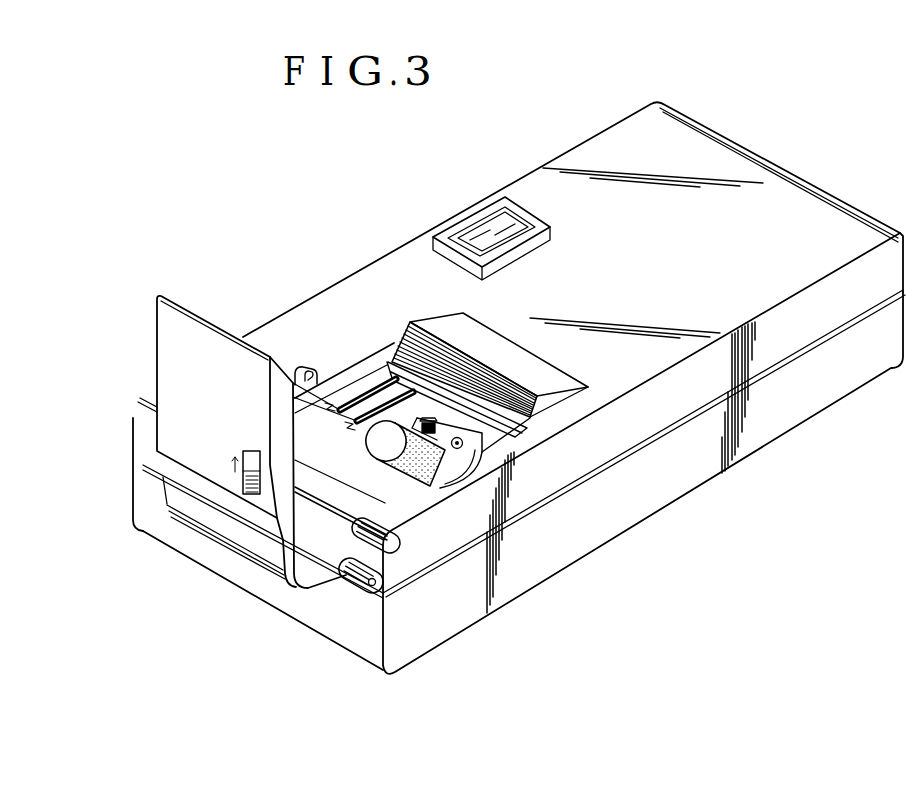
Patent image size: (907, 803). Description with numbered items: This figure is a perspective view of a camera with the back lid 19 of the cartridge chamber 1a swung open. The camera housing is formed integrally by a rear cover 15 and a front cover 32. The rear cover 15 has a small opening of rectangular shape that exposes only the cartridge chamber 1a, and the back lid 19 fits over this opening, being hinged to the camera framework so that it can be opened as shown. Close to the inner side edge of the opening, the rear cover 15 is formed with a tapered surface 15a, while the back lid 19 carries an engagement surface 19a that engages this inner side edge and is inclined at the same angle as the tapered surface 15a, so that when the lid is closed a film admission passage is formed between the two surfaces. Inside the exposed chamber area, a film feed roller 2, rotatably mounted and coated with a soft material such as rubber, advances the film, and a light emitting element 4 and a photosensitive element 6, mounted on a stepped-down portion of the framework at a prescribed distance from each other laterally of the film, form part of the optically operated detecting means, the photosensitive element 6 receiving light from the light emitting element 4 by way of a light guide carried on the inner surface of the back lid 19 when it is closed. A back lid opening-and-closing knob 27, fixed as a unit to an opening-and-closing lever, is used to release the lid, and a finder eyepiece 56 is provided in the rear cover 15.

The rear cover 15 is at (770, 209).
The finder eyepiece 56 is at (500, 232).
The photosensitive element 6 is at (430, 423).
The tapered surface 15a is at (393, 342).
The cartridge chamber 1a is at (326, 440).
The engagement surface 19a is at (284, 358).
The back lid 19 is at (183, 358).
The film feed roller 2 is at (398, 450).
The back lid opening-and-closing knob 27 is at (253, 490).
The light emitting element 4 is at (467, 457).
The front cover 32 is at (682, 467).